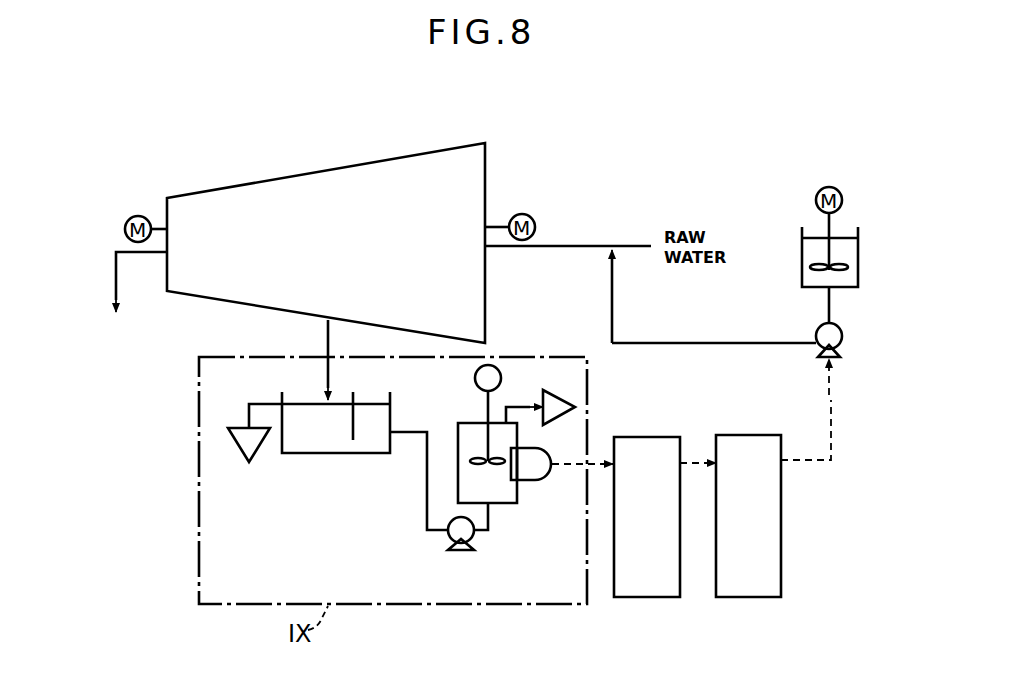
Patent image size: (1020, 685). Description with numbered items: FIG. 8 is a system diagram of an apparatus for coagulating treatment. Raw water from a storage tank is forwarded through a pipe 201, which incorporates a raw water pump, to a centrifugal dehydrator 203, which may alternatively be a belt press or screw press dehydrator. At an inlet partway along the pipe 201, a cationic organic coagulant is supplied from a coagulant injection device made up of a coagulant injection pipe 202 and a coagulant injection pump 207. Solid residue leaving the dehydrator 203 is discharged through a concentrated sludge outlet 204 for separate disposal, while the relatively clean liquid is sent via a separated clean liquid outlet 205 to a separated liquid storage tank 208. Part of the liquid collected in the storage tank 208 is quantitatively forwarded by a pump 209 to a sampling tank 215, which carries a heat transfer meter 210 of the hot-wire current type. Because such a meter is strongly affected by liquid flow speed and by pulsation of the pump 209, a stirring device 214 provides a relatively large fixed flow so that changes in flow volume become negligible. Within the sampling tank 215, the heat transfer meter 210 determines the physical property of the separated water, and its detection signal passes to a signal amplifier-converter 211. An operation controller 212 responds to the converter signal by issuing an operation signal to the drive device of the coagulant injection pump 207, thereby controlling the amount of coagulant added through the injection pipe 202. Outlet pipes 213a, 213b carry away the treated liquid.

The pipe 201 is at (624, 246).
The coagulant injection pipe 202 is at (706, 343).
The centrifugal dehydrator 203 is at (347, 167).
The concentrated sludge outlet 204 is at (116, 268).
The separated clean liquid outlet 205 is at (328, 346).
The coagulant injection pump 207 is at (843, 336).
The separated liquid storage tank 208 is at (304, 455).
The pump 209 is at (448, 540).
The heat transfer meter 210 is at (560, 447).
The signal amplifier-converter 211 is at (642, 599).
The operation controller 212 is at (745, 599).
The outlet pipe 213a is at (245, 410).
The outlet pipe 213b is at (522, 404).
The stirring device 214 is at (475, 378).
The sampling tank 215 is at (498, 505).